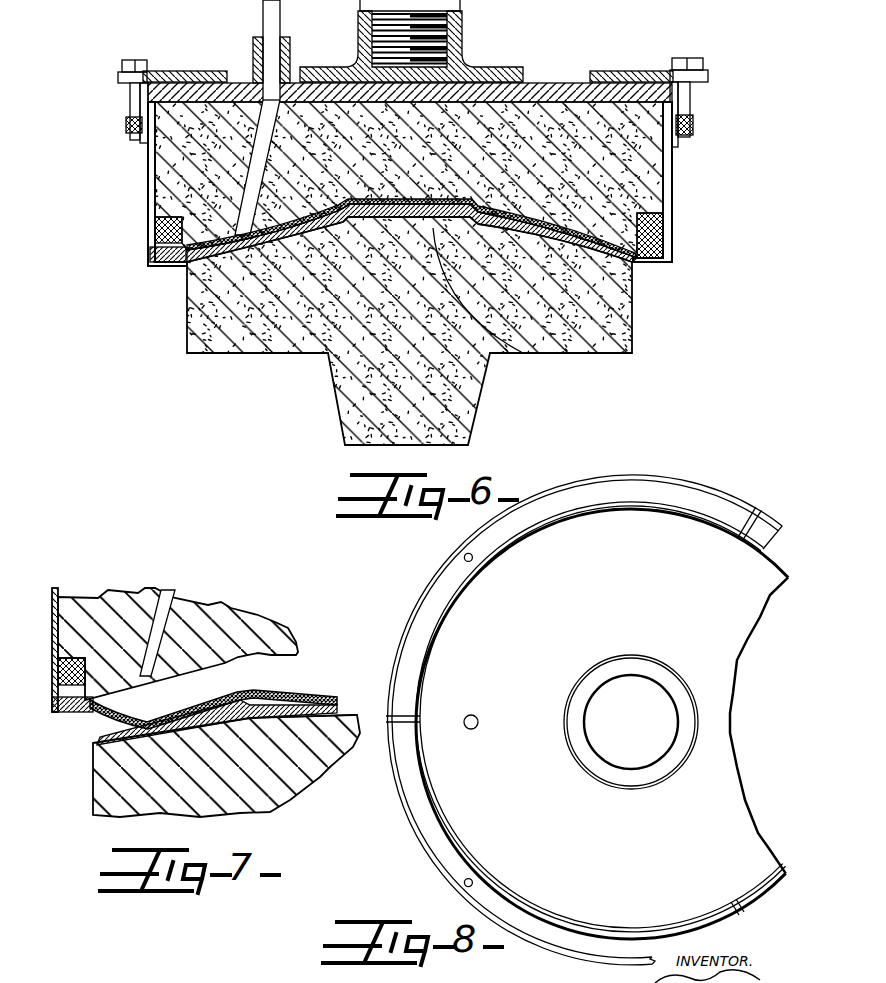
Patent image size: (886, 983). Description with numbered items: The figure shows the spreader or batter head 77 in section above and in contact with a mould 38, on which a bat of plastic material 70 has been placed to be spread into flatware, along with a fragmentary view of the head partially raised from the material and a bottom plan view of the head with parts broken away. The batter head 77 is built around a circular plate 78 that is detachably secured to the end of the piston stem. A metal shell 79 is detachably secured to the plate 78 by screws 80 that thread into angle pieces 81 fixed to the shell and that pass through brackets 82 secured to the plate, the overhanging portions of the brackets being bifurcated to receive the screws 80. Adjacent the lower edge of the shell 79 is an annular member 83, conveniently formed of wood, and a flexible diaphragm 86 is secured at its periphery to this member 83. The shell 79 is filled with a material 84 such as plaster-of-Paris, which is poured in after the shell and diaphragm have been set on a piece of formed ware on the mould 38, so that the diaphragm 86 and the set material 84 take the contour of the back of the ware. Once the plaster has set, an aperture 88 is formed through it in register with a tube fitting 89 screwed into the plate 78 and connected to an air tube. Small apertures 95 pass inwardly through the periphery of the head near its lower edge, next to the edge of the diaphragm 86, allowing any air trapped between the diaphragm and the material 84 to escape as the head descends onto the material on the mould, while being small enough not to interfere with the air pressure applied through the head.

In FIG. 6, the mould 38 is at (192, 312).
In FIG. 7, the mould 38 is at (100, 793).
In FIG. 6, the plastic material 70 is at (520, 354).
In FIG. 7, the plastic material 70 is at (333, 703).
In FIG. 6, the batter head 77 is at (672, 165).
In FIG. 7, the batter head 77 is at (52, 609).
In FIG. 6, the circular plate 78 is at (545, 83).
In FIG. 6, the metal shell 79 is at (148, 162).
In FIG. 7, the metal shell 79 is at (52, 637).
In FIG. 8, the metal shell 79 is at (428, 584).
In FIG. 6, the screws 80 is at (118, 93).
In FIG. 6, the angle pieces 81 is at (126, 124).
In FIG. 6, the brackets 82 is at (160, 71).
In FIG. 6, the annular member 83 is at (155, 222).
In FIG. 7, the annular member 83 is at (58, 665).
In FIG. 8, the annular member 83 is at (655, 478).
In FIG. 6, the material 84 is at (170, 170).
In FIG. 7, the material 84 is at (118, 597).
In FIG. 8, the material 84 is at (627, 620).
In FIG. 6, the flexible diaphragm 86 is at (220, 272).
In FIG. 7, the flexible diaphragm 86 is at (185, 706).
In FIG. 6, the aperture 88 is at (252, 178).
In FIG. 7, the aperture 88 is at (168, 590).
In FIG. 8, the aperture 88 is at (476, 729).
In FIG. 6, the tube fitting 89 is at (252, 75).
In FIG. 6, the small apertures 95 is at (150, 253).
In FIG. 7, the small apertures 95 is at (52, 700).
In FIG. 8, the small apertures 95 is at (752, 512).